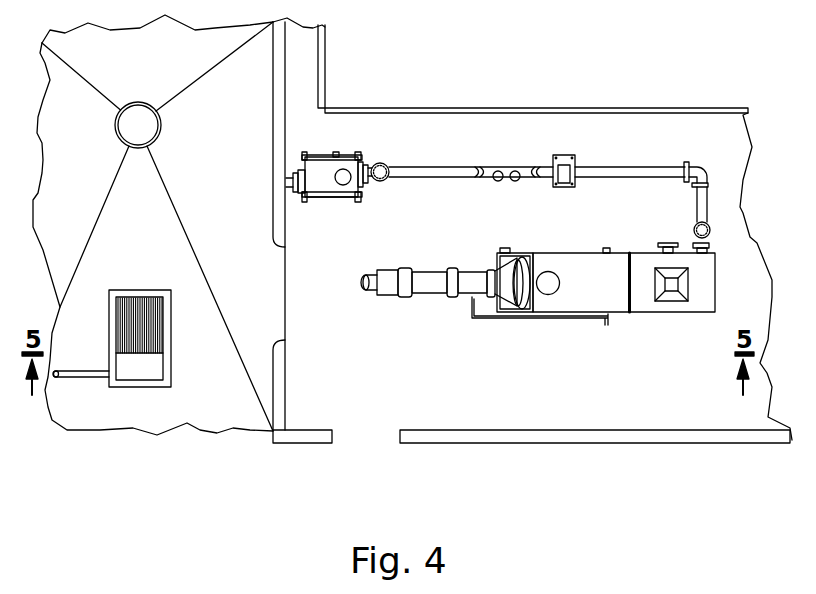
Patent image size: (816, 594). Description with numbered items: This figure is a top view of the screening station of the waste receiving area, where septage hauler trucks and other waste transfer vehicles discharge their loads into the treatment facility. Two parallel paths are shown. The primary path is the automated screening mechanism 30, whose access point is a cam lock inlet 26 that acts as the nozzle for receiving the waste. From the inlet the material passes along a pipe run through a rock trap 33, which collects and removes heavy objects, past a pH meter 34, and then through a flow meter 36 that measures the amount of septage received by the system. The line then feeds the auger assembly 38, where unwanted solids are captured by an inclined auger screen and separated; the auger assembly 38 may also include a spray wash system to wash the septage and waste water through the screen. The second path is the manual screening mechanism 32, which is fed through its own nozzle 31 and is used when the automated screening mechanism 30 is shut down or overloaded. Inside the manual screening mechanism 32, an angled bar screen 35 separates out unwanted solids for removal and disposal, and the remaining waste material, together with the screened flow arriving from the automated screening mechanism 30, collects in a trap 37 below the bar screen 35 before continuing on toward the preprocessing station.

The cam lock inlet 26 is at (292, 181).
The automated screening mechanism 30 is at (571, 330).
The nozzle 31 is at (78, 374).
The manual screening mechanism 32 is at (147, 320).
The rock trap 33 is at (346, 167).
The pH meter 34 is at (563, 156).
The angled bar screen 35 is at (134, 336).
The flow meter 36 is at (710, 246).
The trap 37 is at (142, 374).
The auger assembly 38 is at (445, 292).